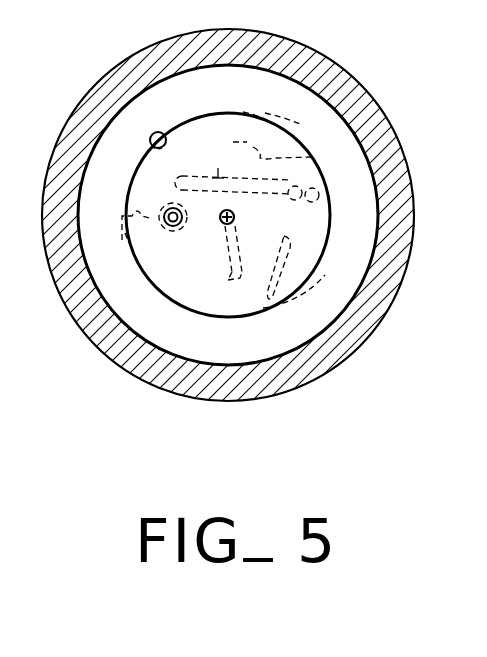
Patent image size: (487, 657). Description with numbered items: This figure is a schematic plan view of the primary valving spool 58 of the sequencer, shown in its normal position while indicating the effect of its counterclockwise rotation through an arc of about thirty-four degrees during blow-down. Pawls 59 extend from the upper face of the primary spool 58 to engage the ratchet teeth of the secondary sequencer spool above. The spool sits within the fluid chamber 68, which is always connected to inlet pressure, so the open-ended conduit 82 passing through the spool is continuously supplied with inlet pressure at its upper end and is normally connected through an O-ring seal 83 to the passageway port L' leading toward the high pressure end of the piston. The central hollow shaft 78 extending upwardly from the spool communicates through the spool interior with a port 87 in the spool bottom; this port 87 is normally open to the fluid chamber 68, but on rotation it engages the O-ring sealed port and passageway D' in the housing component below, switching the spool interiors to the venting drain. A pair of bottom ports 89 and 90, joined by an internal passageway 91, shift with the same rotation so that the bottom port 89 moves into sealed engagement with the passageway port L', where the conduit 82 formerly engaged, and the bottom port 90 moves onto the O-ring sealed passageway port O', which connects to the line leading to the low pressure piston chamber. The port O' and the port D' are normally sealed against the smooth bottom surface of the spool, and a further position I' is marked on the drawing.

The primary valving spool 58 is at (305, 143).
The pawls 59 is at (292, 128).
The fluid chamber 68 is at (325, 305).
The central hollow shaft 78 is at (236, 217).
The open-ended conduit 82 is at (163, 207).
The O-ring seal 83 is at (187, 227).
The port 87 is at (238, 283).
The bottom port 89 is at (172, 170).
The bottom port 90 is at (247, 191).
The internal passageway 91 is at (217, 160).
The position I' is at (165, 119).
The O-ring sealed passageway port O' is at (339, 142).
The passageway port L' is at (137, 261).
The O-ring sealed port and passageway D' is at (292, 262).